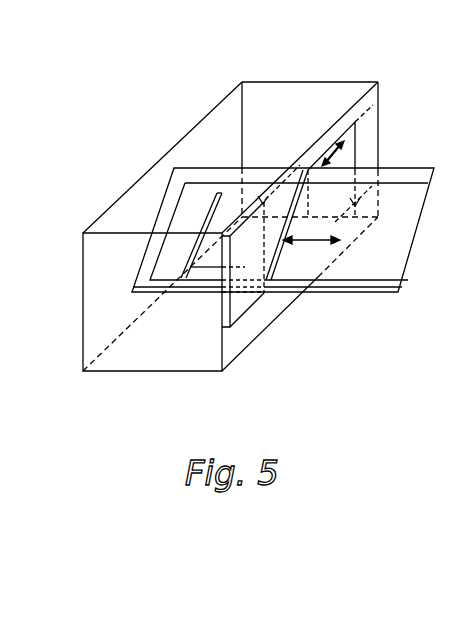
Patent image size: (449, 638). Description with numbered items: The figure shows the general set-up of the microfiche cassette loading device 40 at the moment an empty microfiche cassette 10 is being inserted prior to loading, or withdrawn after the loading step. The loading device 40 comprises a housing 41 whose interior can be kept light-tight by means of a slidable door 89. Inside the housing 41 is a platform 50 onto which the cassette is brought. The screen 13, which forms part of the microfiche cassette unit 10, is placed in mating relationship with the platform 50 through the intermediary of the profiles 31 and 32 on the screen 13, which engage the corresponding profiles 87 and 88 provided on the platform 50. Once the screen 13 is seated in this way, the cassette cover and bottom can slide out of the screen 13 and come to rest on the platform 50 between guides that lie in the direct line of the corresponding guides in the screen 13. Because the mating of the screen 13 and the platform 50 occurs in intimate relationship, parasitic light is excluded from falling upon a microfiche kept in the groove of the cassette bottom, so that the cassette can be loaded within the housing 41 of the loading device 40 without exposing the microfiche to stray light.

The microfiche cassette loading device 40 is at (345, 80).
The housing 41 is at (197, 126).
The screen 13 is at (390, 248).
The platform 50 is at (175, 207).
The profile 87 is at (223, 323).
The profile 88 is at (287, 170).
The profile 31 is at (258, 292).
The profile 32 is at (312, 170).
The slidable door 89 is at (343, 138).
The microfiche cassette 10 is at (287, 262).